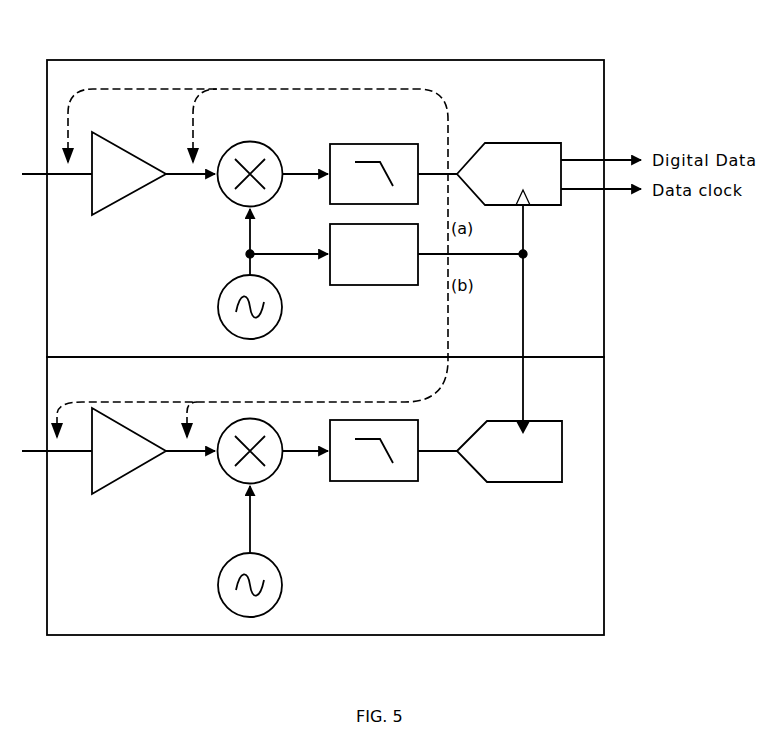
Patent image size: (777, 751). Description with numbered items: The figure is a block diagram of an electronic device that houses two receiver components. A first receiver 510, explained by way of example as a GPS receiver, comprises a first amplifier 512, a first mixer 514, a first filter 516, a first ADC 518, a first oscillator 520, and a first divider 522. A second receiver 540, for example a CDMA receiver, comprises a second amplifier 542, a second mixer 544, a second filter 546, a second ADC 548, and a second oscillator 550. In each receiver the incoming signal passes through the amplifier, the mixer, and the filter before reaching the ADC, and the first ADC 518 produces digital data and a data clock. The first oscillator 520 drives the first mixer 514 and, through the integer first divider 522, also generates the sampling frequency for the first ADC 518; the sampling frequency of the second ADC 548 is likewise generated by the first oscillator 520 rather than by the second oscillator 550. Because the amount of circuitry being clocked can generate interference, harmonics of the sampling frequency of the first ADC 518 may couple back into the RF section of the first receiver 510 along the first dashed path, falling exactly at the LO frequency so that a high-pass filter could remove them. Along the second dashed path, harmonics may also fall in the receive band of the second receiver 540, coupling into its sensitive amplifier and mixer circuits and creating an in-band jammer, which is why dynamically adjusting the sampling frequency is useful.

The first receiver 510 is at (423, 60).
The first amplifier 512 is at (110, 142).
The first mixer 514 is at (250, 142).
The first filter 516 is at (360, 144).
The first ADC 518 is at (502, 143).
The first oscillator 520 is at (218, 318).
The first divider 522 is at (370, 285).
The second receiver 540 is at (148, 635).
The second amplifier 542 is at (112, 480).
The second mixer 544 is at (266, 477).
The second filter 546 is at (370, 481).
The second ADC 548 is at (540, 421).
The second oscillator 550 is at (280, 598).